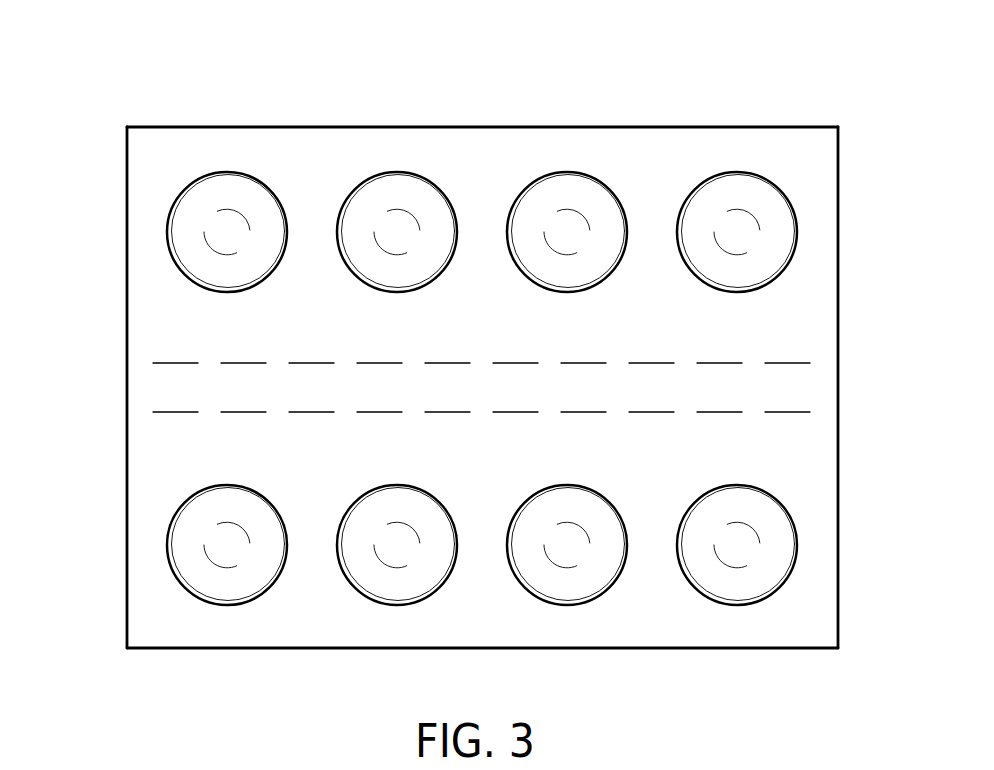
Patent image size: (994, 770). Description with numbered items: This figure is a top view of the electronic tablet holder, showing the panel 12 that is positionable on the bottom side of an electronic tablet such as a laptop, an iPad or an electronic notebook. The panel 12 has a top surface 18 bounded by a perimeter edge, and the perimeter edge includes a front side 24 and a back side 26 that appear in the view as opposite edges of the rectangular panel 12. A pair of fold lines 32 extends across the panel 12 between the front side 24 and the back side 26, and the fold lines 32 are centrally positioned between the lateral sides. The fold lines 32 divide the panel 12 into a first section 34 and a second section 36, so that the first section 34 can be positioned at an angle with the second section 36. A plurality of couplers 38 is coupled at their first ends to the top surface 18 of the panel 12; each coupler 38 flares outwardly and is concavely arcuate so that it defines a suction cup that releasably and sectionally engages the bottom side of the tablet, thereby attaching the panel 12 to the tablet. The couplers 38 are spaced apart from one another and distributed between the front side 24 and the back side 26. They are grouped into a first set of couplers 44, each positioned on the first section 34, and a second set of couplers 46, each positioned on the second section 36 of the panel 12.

The panel 12 is at (168, 127).
The top surface 18 is at (648, 165).
The front side 24 is at (127, 313).
The back side 26 is at (838, 284).
The fold lines 32 is at (788, 363).
The first section 34 is at (454, 160).
The second section 36 is at (663, 616).
The couplers 38 is at (562, 177).
The first set of couplers 44 is at (160, 221).
The second set of couplers 46 is at (152, 543).